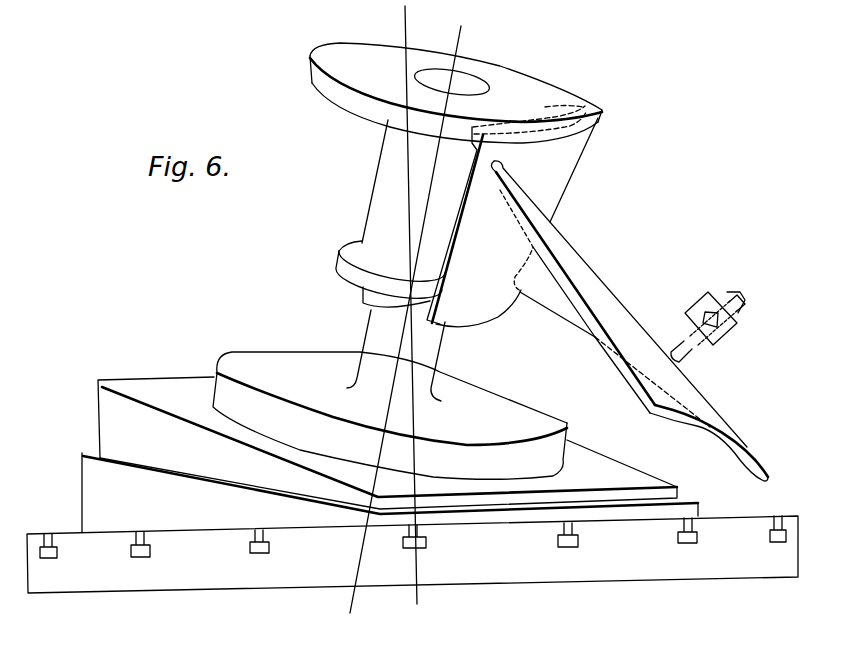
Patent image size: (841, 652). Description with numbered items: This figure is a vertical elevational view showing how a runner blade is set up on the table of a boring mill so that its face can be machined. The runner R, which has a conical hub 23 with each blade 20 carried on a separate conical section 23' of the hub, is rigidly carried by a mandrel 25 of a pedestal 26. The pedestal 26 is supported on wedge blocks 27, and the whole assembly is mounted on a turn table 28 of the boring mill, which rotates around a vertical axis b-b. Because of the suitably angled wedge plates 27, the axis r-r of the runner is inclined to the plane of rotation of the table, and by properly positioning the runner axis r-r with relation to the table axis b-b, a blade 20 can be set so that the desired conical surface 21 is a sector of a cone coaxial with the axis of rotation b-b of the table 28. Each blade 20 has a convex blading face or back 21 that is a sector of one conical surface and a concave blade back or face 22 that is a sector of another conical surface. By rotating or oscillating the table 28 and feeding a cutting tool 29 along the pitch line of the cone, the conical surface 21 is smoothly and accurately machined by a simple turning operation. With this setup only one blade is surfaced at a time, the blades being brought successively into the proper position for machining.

The runner blade 20 is at (742, 425).
The convex blade face 21 is at (628, 315).
The concave blade face 22 is at (555, 293).
The conical hub 23 is at (470, 190).
The conical hub section 23' is at (490, 225).
The mandrel 25 is at (377, 324).
The pedestal 26 is at (288, 348).
The wedge blocks 27 is at (390, 454).
The turn table 28 is at (412, 554).
The cutting tool 29 is at (695, 345).
The runner R is at (572, 222).
The table axis b is at (411, 308).
The runner axis r is at (405, 319).